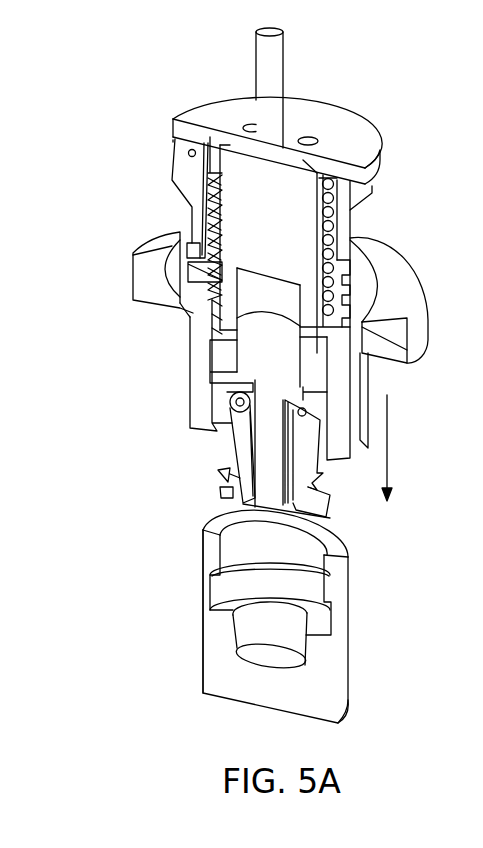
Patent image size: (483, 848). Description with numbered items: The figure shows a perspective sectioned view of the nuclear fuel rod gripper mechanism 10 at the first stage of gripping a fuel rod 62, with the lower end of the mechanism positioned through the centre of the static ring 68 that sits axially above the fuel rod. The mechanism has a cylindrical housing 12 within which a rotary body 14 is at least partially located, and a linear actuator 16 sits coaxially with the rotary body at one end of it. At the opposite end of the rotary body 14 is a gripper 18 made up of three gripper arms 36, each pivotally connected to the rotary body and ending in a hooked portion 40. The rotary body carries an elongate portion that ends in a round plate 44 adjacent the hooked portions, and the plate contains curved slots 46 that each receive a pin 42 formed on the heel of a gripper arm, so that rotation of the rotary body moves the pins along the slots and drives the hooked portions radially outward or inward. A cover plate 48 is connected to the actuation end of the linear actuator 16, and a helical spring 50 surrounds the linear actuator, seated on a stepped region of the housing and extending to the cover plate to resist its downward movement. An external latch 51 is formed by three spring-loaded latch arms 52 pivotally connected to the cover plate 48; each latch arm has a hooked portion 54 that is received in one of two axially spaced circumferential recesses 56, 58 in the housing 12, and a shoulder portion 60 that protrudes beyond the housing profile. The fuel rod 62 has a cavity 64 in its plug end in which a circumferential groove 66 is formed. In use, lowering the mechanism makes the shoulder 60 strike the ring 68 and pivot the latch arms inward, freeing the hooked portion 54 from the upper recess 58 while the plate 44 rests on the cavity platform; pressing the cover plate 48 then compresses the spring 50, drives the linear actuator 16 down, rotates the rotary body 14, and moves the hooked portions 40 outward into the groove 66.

The nuclear fuel rod gripper mechanism 10 is at (398, 78).
The housing 12 is at (197, 355).
The rotary body 14 is at (283, 372).
The linear actuator 16 is at (294, 235).
The gripper 18 is at (213, 504).
The gripper arms 36 is at (238, 437).
The hooked portion 40 is at (226, 471).
The pin 42 is at (222, 494).
The plate 44 is at (327, 515).
The curved slots 46 is at (322, 496).
The cover plate 48 is at (238, 103).
The helical spring 50 is at (353, 258).
The external latch 51 is at (130, 174).
The latch arms 52 is at (190, 220).
The hooked portion 54 is at (178, 244).
The circumferential recess 56 is at (362, 322).
The circumferential recess 58 is at (343, 287).
The shoulder portion 60 is at (175, 163).
The fuel rod 62 is at (313, 697).
The cavity 64 is at (280, 568).
The circumferential groove 66 is at (322, 617).
The static ring 68 is at (385, 236).